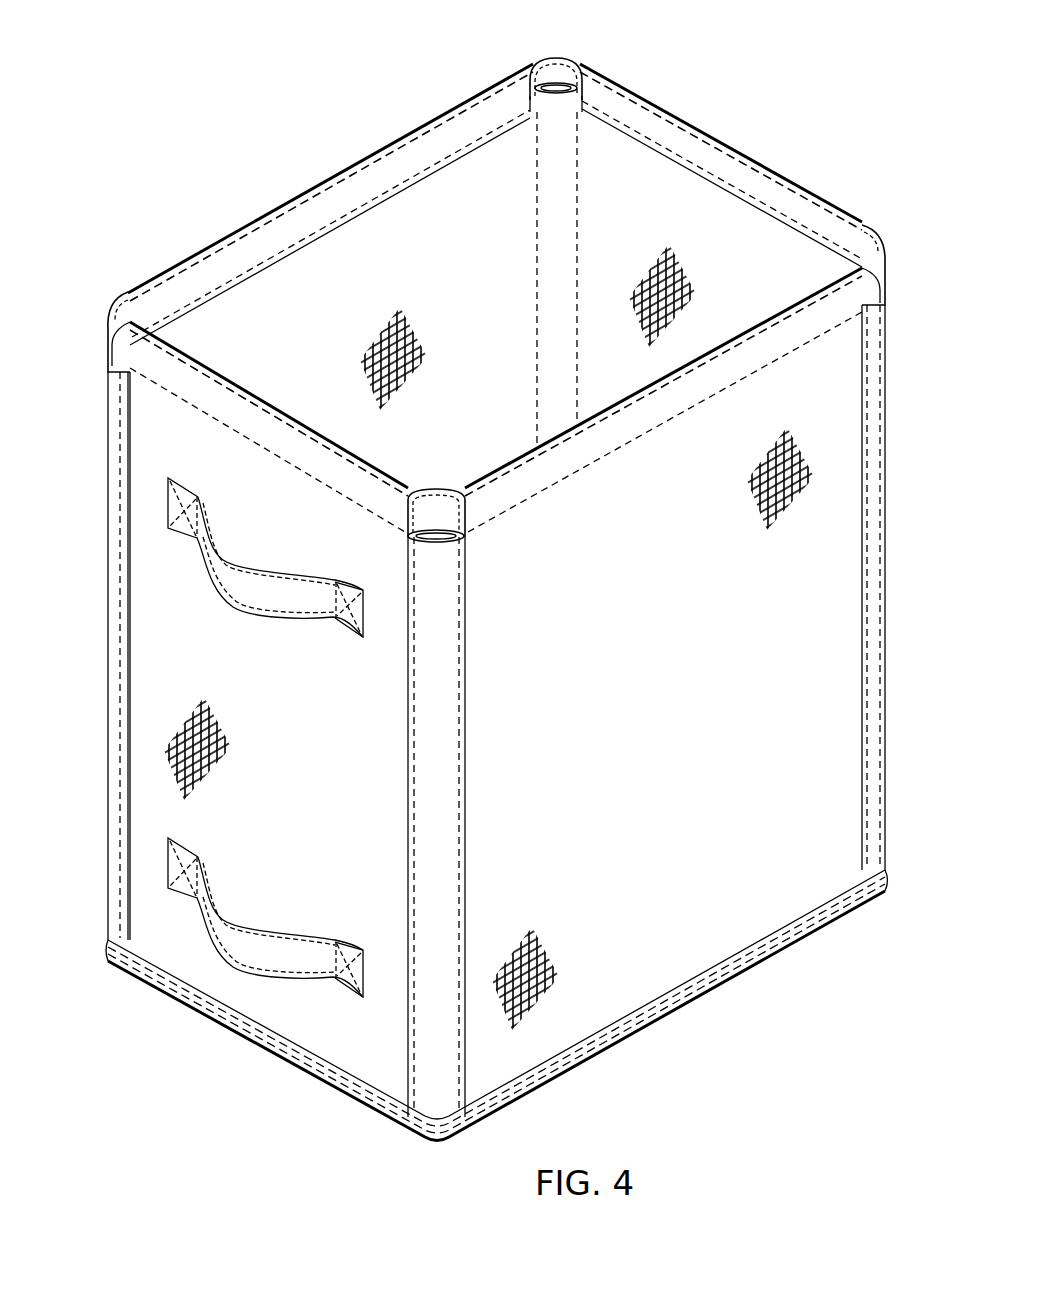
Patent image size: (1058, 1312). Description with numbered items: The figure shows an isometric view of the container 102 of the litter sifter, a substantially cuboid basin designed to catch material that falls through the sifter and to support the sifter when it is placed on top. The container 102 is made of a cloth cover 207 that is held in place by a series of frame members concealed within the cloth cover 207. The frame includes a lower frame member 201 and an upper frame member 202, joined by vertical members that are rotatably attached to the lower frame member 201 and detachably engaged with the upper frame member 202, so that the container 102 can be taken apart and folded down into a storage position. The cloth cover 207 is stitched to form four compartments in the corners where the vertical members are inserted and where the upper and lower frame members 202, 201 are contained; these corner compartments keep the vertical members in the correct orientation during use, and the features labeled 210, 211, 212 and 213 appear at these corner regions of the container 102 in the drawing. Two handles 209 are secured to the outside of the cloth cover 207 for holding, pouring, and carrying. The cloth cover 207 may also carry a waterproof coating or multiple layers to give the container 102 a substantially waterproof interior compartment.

The container 102 is at (762, 90).
The lower frame member 201 is at (571, 63).
The upper frame member 202 is at (792, 938).
The cloth cover 207 is at (165, 588).
The handles 209 is at (255, 600).
The frame tube end 210 is at (553, 85).
The right corner sleeve 211 is at (873, 288).
The front corner sleeve 212 is at (437, 538).
The left corner sleeve 213 is at (118, 352).